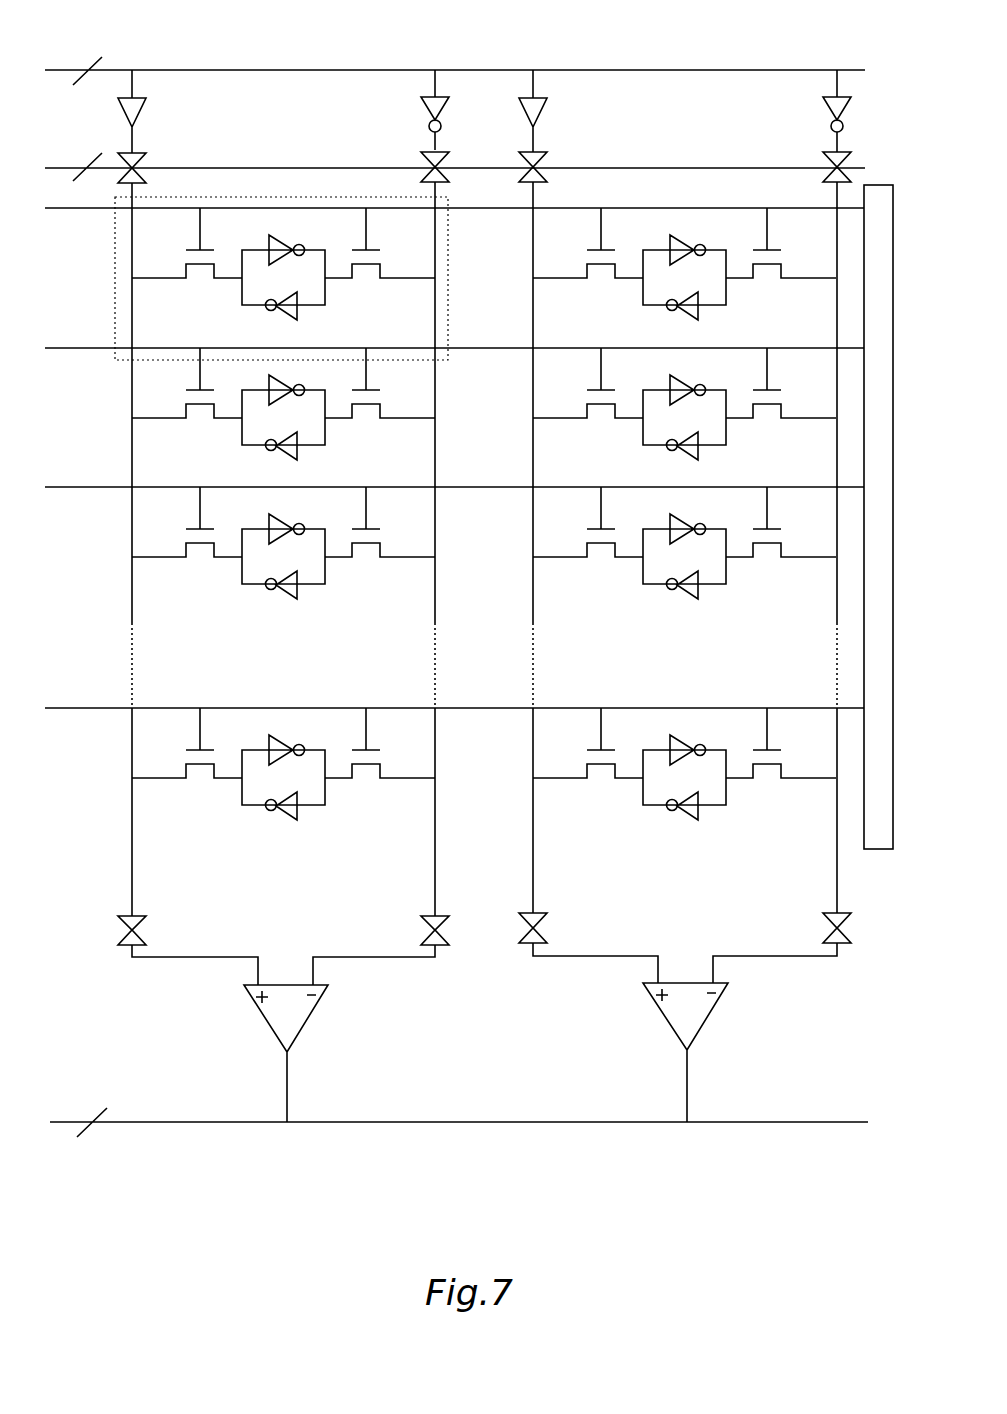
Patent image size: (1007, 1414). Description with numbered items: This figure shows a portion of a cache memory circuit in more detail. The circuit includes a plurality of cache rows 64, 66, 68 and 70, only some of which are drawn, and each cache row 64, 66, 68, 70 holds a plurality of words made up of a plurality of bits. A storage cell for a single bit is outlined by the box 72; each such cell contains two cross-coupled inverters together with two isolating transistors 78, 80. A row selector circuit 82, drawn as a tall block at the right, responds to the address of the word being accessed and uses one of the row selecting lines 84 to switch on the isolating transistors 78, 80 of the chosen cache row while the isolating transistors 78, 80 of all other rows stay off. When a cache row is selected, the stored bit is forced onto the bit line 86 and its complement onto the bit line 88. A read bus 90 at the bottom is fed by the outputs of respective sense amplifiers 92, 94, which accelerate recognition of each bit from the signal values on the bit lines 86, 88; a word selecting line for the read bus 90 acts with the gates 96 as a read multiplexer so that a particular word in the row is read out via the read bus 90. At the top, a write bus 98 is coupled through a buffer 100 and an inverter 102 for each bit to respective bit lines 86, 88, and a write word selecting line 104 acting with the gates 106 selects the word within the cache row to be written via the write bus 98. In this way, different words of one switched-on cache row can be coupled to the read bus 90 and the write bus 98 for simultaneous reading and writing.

The cache row 64 is at (92, 280).
The cache row 66 is at (92, 420).
The cache row 68 is at (92, 567).
The cache row 70 is at (92, 783).
The box 72 is at (315, 278).
The isolating transistor 78 is at (382, 275).
The isolating transistor 80 is at (185, 275).
The row selector circuit 82 is at (888, 850).
The row selecting line 84 is at (642, 205).
The bit line 86 is at (133, 833).
The bit line 88 is at (435, 815).
The read bus 90 is at (240, 1122).
The sense amplifier 92 is at (317, 1008).
The sense amplifier 94 is at (717, 1005).
The gate 96 is at (537, 913).
The write bus 98 is at (165, 70).
The buffer 100 is at (140, 108).
The inverter 102 is at (422, 110).
The write word selecting line 104 is at (85, 133).
The gate 106 is at (137, 157).